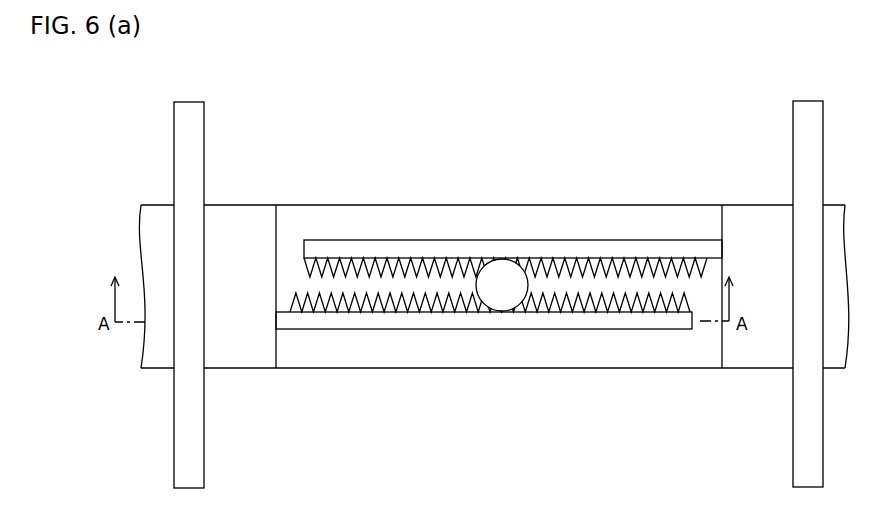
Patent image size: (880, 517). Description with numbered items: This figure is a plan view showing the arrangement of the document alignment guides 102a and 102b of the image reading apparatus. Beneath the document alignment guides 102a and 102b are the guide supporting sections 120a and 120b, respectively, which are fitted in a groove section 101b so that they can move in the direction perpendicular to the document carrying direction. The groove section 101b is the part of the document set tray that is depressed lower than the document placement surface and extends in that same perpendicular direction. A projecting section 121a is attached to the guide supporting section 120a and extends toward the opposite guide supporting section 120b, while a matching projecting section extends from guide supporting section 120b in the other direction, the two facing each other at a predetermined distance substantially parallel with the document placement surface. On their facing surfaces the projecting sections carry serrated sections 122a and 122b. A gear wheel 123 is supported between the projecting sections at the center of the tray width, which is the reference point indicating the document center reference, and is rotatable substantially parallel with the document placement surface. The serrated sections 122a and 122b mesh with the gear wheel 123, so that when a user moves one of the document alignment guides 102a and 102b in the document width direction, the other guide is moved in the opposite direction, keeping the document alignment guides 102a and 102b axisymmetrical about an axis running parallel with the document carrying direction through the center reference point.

The groove section 101b is at (322, 358).
The document alignment guide 102a is at (190, 108).
The document alignment guide 102b is at (806, 106).
The guide supporting section 120a is at (238, 212).
The guide supporting section 120b is at (756, 210).
The projecting section 121a is at (585, 245).
The serrated section 122a is at (636, 308).
The serrated section 122b is at (410, 268).
The gear wheel 123 is at (502, 272).